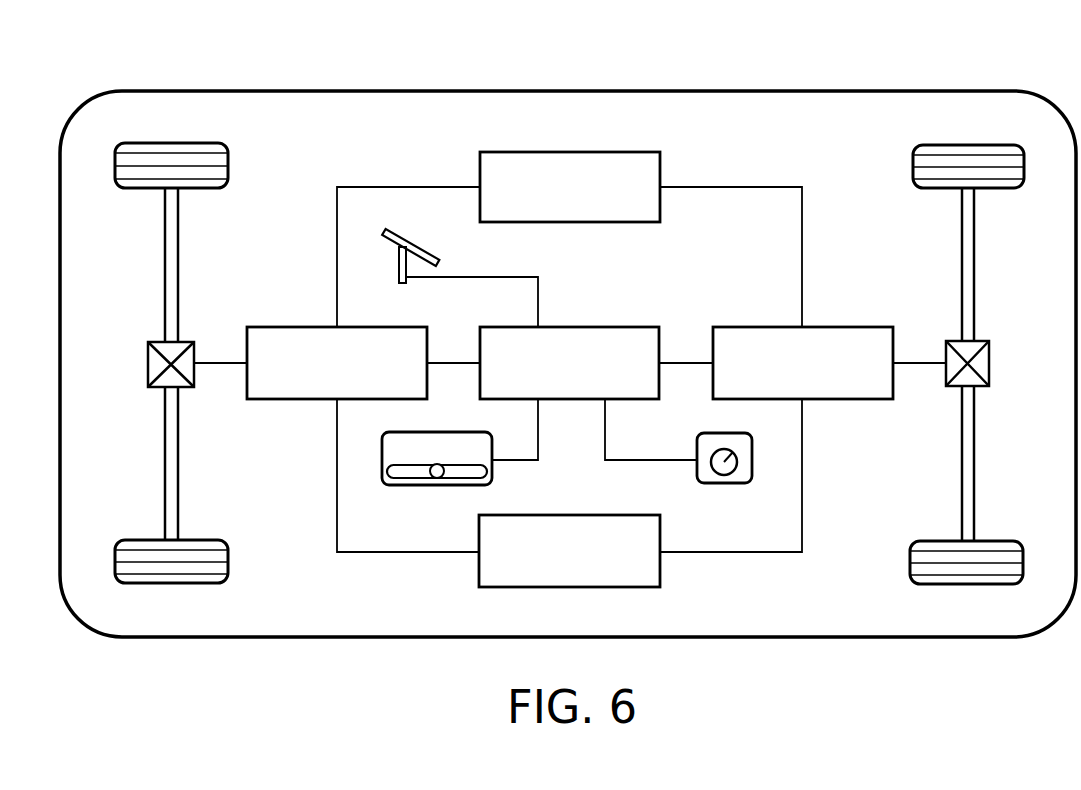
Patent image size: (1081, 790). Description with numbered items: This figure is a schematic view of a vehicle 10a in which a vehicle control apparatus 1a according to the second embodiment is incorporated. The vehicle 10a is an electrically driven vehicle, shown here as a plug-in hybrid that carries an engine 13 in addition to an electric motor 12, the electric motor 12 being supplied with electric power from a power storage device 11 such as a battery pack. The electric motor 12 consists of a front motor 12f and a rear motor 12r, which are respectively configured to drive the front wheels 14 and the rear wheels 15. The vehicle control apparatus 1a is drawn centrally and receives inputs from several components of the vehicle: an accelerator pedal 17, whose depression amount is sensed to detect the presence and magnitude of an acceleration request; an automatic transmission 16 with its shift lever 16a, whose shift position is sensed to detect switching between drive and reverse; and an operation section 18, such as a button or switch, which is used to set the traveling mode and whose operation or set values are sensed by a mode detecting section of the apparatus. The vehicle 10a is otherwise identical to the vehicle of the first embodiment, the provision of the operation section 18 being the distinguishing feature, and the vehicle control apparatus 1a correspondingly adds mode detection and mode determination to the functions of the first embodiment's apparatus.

The vehicle 10a is at (953, 91).
The front wheels 14 is at (205, 143).
The rear wheels 15 is at (1002, 145).
The engine 13 is at (634, 152).
The accelerator pedal 17 is at (420, 243).
The electric motor 12 is at (564, 341).
The front motor 12f is at (264, 327).
The rear motor 12r is at (859, 327).
The vehicle control apparatus 1a is at (632, 327).
The automatic transmission 16 is at (451, 432).
The shift lever 16a is at (437, 479).
The power storage device 11 is at (633, 515).
The operation section 18 is at (725, 484).